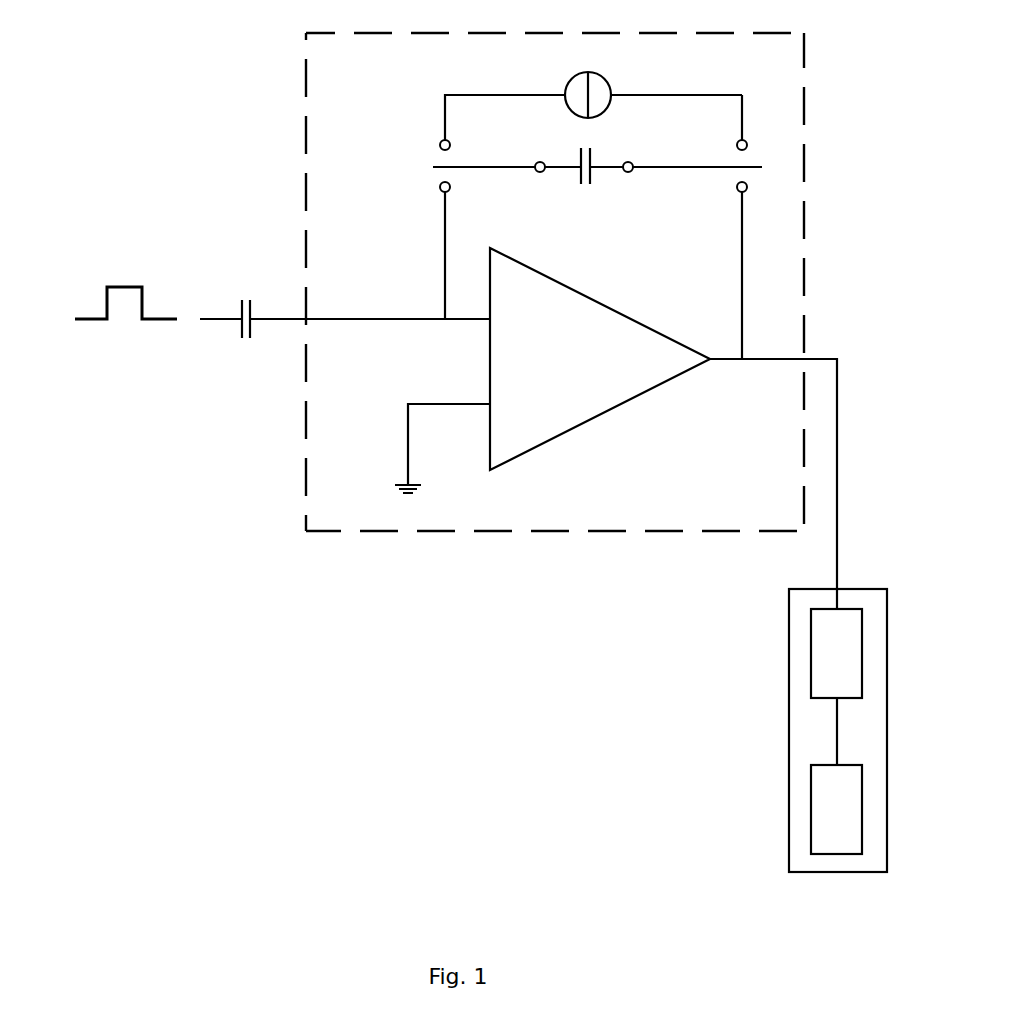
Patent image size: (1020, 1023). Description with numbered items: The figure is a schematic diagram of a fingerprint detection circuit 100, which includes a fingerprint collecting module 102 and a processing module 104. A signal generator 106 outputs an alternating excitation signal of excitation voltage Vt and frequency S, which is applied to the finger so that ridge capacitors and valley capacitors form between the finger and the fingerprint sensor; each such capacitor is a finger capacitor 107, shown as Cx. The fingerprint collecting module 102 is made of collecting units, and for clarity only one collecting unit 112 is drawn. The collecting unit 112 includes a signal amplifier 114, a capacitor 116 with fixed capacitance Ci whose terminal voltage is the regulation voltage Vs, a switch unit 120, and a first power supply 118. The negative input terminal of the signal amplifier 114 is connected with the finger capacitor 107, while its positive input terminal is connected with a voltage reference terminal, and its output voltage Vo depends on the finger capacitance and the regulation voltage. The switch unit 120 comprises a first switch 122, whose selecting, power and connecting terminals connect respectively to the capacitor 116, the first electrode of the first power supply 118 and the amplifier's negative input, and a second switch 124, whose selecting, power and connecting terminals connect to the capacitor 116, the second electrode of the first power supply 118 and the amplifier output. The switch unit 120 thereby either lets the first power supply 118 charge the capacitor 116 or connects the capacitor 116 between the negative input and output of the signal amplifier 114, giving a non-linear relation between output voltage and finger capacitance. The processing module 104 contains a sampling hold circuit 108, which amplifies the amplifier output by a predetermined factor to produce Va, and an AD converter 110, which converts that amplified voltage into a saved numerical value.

The fingerprint detection circuit 100 is at (90, 33).
The fingerprint collecting module 102 is at (513, 321).
The processing module 104 is at (805, 736).
The signal generator 106 is at (140, 269).
The finger capacitor 107 is at (260, 345).
The sampling hold circuit 108 is at (811, 655).
The AD converter 110 is at (811, 790).
The collecting unit 112 is at (305, 137).
The signal amplifier 114 is at (607, 412).
The capacitor 116 is at (592, 178).
The first power supply 118 is at (607, 80).
The switch unit 120 is at (409, 109).
The first switch 122 is at (408, 164).
The second switch 124 is at (683, 140).